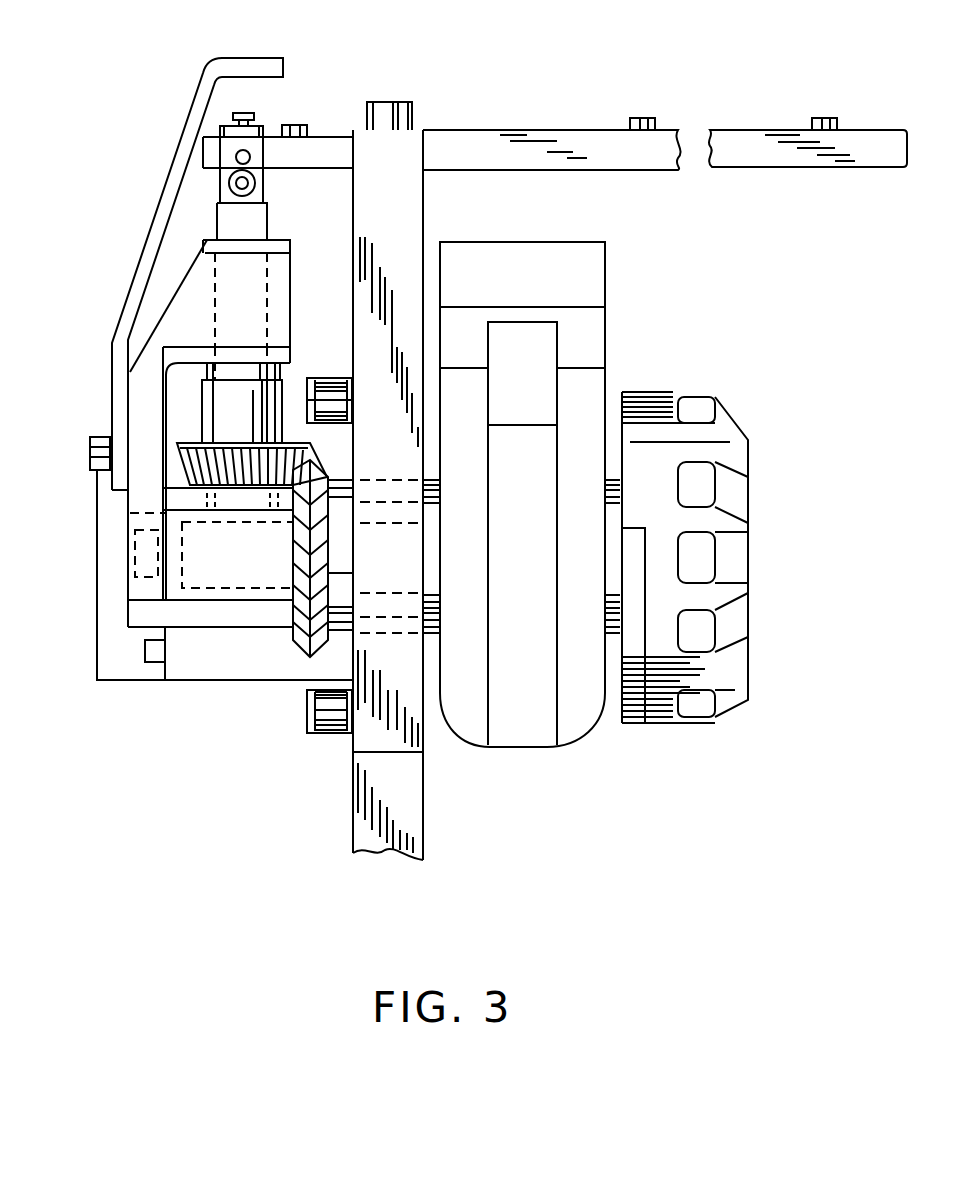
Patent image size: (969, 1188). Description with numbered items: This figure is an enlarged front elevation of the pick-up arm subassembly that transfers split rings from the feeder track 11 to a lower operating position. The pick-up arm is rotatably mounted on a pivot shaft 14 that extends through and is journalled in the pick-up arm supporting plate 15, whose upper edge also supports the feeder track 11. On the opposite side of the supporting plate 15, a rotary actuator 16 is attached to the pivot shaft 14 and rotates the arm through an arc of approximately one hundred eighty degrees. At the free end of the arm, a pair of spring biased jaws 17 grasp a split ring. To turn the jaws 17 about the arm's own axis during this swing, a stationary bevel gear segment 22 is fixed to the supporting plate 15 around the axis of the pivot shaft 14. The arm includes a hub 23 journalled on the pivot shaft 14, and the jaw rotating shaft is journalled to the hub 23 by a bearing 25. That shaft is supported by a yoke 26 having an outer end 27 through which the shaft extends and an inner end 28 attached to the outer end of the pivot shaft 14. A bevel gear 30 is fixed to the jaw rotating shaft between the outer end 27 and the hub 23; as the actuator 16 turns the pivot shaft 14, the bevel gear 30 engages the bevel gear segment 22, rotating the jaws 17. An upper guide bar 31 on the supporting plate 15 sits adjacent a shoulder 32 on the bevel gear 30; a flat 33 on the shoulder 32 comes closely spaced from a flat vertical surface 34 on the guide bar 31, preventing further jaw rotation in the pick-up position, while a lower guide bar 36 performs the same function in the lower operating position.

The feeder track 11 is at (530, 148).
The pivot shaft 14 is at (125, 600).
The pick-up arm supporting plate 15 is at (407, 207).
The rotary actuator 16 is at (733, 672).
The spring biased jaws 17 is at (253, 122).
The stationary bevel gear segment 22 is at (302, 640).
The hub 23 is at (233, 583).
The bearing 25 is at (180, 505).
The yoke 26 is at (152, 363).
The outer end of the yoke 27 is at (193, 288).
The inner end of the yoke 28 is at (160, 527).
The bevel gear 30 is at (190, 470).
The upper guide bar 31 is at (333, 380).
The shoulder 32 is at (222, 405).
The flat 33 is at (285, 395).
The flat vertical surface 34 is at (320, 400).
The lower guide bar 36 is at (330, 713).